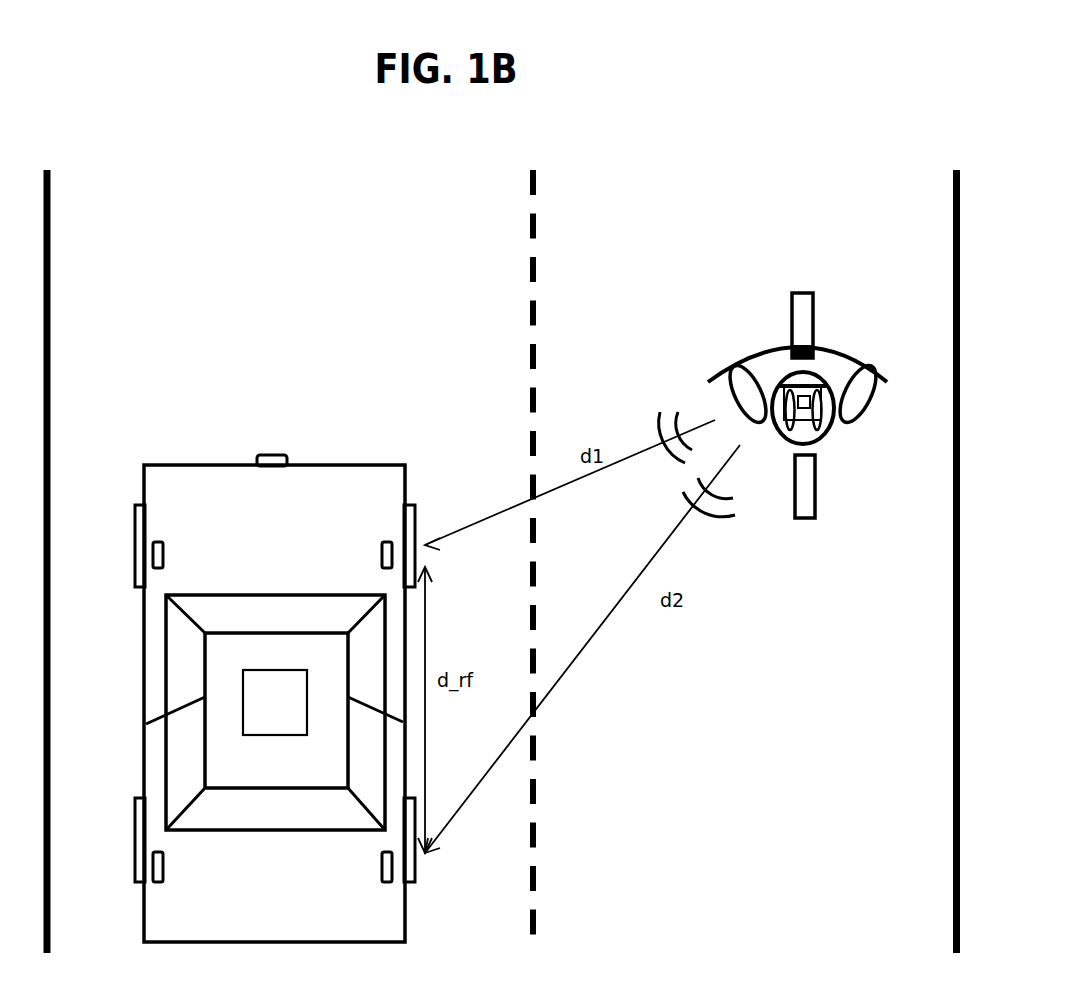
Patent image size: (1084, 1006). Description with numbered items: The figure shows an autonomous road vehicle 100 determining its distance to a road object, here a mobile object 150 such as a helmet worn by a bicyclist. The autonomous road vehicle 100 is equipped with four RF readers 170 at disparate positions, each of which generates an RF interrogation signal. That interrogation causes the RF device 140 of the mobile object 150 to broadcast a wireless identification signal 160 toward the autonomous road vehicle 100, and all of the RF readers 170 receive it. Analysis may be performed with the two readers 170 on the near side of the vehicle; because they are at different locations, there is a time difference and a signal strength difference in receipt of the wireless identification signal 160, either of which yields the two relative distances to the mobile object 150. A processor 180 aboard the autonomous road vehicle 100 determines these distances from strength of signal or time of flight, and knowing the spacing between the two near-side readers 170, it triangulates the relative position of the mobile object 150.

The autonomous road vehicle 100 is at (366, 458).
The RF device 140 is at (790, 312).
The mobile object 150 is at (835, 247).
The wireless identification signal 160 is at (709, 465).
The RF readers 170 is at (272, 454).
The processor 180 is at (290, 669).